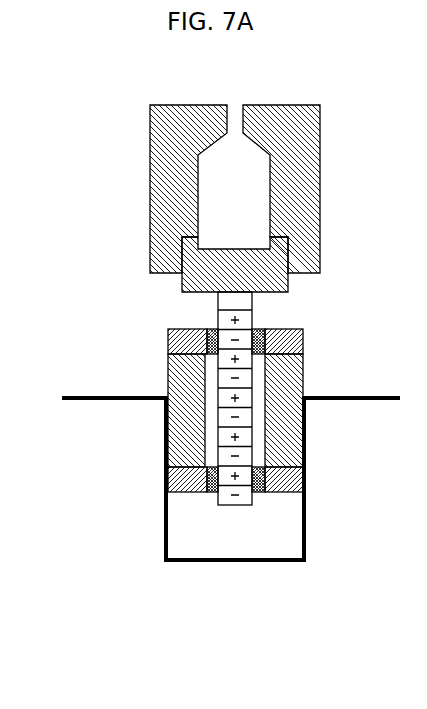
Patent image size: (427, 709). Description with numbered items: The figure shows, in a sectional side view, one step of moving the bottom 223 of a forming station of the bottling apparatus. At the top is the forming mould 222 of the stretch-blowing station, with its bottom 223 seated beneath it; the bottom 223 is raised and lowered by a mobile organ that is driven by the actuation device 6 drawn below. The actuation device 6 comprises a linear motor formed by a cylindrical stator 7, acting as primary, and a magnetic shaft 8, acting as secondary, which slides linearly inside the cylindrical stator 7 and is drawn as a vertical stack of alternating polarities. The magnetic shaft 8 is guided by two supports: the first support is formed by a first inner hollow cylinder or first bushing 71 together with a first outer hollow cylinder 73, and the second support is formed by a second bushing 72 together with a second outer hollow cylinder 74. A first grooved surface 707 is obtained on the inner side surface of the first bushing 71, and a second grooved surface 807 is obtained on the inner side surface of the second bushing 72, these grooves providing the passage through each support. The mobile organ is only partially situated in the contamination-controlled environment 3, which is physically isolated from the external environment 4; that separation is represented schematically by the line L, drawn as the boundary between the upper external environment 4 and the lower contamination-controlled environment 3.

The forming mould 222 is at (142, 160).
The bottom 223 is at (273, 278).
The cylindrical stator 7 is at (185, 377).
The first outer hollow cylinder 73 is at (168, 340).
The second outer hollow cylinder 74 is at (175, 485).
The first bushing 71 is at (212, 335).
The second bushing 72 is at (210, 495).
The first grooved surface 707 is at (245, 332).
The second grooved surface 807 is at (255, 495).
The magnetic shaft 8 is at (252, 440).
The line L is at (340, 398).
The actuation device 6 is at (265, 581).
The external environment 4 is at (62, 360).
The contamination-controlled environment 3 is at (60, 455).